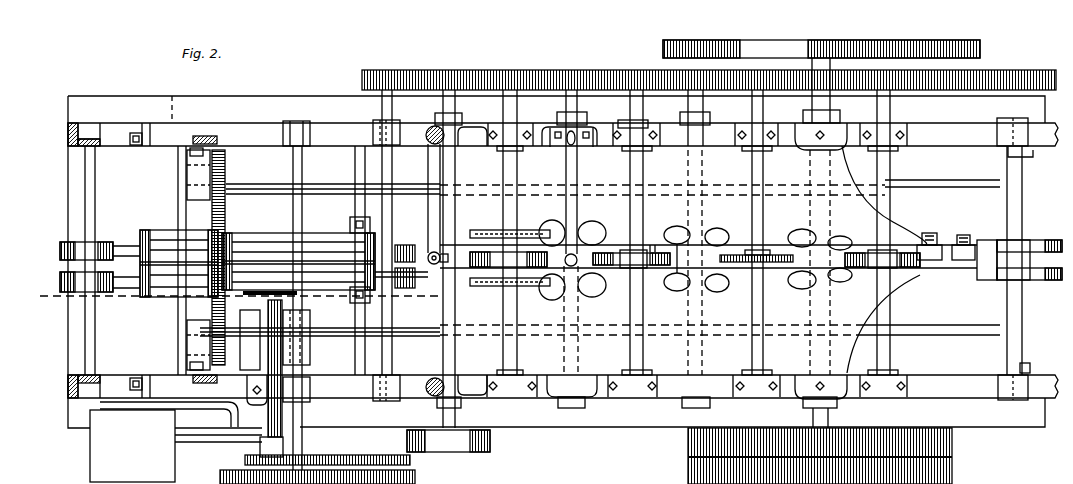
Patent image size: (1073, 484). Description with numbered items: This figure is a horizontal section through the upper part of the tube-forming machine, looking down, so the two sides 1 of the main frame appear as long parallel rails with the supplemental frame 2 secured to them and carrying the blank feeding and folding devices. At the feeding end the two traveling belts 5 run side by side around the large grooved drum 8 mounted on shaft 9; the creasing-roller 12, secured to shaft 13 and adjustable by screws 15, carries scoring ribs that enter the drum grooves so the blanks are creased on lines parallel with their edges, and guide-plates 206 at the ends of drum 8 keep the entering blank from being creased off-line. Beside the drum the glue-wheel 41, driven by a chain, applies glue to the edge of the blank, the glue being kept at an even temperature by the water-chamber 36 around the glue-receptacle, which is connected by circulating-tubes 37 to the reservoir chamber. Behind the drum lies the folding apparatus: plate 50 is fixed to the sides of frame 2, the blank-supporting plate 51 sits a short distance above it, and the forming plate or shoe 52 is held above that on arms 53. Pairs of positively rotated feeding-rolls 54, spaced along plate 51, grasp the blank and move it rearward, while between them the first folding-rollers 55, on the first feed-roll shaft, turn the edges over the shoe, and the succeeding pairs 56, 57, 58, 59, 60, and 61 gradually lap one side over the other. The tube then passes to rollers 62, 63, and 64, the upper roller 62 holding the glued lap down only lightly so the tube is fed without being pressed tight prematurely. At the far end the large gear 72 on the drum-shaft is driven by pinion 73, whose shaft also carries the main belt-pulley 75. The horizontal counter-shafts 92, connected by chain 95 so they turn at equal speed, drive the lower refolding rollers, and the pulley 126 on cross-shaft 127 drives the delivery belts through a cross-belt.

The sides 1 is at (556, 262).
The supplemental frame 2 is at (540, 402).
The traveling belts 5 is at (126, 245).
The roller or drum 8 is at (310, 245).
The shaft 9 is at (302, 166).
The creasing-roller 12 is at (162, 232).
The shaft 13 is at (178, 161).
The screws 15 is at (134, 146).
The water-chamber 36 is at (132, 446).
The circulating-tubes 37 is at (181, 434).
The glue-wheel 41 is at (275, 375).
The plate 50 is at (708, 303).
The blank-supporting plate 51 is at (736, 248).
The forming plate or shoe 52 is at (609, 249).
The arms 53 is at (430, 246).
The feeding-rolls 54 is at (631, 248).
The folding-rollers 55 is at (528, 240).
The folding-rollers 56 is at (553, 228).
The folding-rollers 57 is at (595, 230).
The folding-rollers 58 is at (677, 226).
The folding-rollers 59 is at (717, 228).
The folding-rollers 60 is at (802, 230).
The folding-rollers 61 is at (843, 253).
The upper roller 62 is at (870, 267).
The rollers 63 is at (930, 241).
The rollers 64 is at (962, 241).
The large gear 72 is at (709, 73).
The pinion 73 is at (820, 80).
The main belt-pulley 75 is at (820, 456).
The counter-shafts 92 is at (329, 192).
The chain 95 is at (226, 210).
The pulley 126 is at (490, 446).
The cross-shaft 127 is at (456, 416).
The guide-plates 206 is at (349, 226).